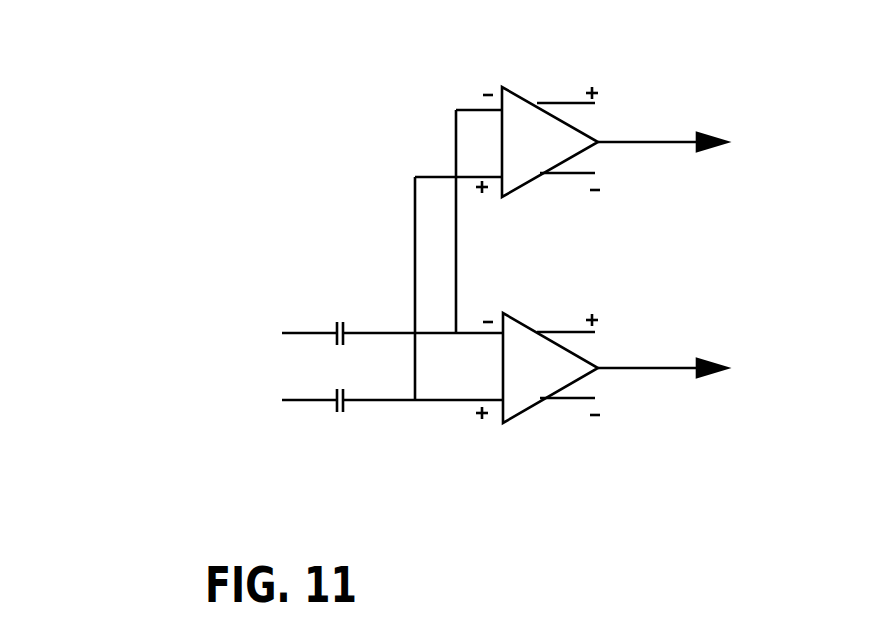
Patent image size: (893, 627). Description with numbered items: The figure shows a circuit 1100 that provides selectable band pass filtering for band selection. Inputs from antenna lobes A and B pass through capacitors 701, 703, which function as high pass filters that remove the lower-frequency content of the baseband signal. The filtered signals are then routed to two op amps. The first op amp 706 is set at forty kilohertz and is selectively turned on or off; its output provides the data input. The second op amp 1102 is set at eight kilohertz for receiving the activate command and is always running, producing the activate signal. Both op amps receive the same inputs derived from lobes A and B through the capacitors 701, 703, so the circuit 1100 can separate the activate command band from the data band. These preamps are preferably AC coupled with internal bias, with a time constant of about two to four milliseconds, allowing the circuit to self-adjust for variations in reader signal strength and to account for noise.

The circuit 1100 is at (441, 235).
The second op amp 1102 is at (587, 128).
The first op amp 706 is at (587, 357).
The capacitor 701 is at (337, 328).
The capacitor 703 is at (335, 407).